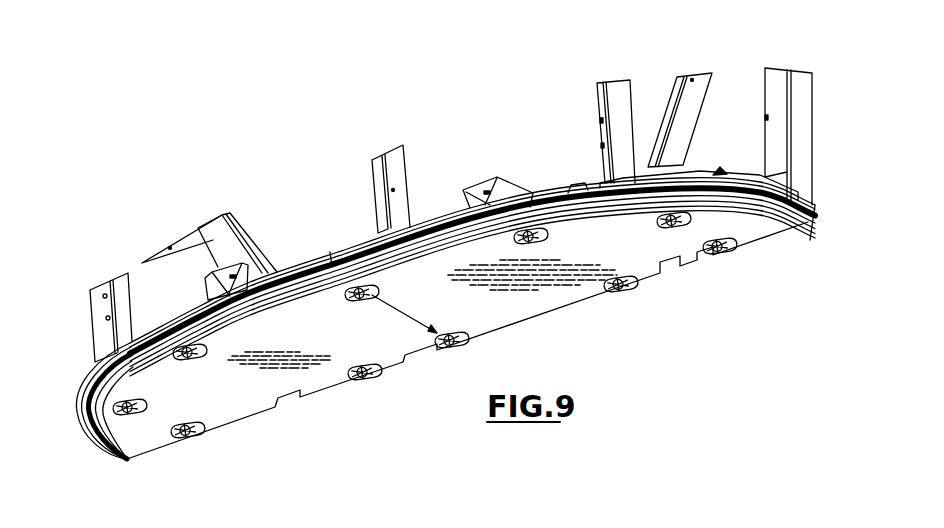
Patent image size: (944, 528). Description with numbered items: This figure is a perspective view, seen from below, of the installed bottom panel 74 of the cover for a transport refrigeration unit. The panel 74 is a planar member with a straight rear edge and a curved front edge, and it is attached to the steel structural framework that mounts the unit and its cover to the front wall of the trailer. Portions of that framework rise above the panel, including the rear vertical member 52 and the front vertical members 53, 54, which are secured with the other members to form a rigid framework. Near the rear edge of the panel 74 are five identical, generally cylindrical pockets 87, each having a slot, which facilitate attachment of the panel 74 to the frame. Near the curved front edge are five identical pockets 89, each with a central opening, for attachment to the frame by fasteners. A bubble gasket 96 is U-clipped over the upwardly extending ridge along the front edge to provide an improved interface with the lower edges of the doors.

The rear vertical member 52 is at (787, 110).
The front vertical member 53 is at (93, 342).
The front vertical member 54 is at (615, 100).
The bottom panel 74 is at (372, 340).
The pocket 87 is at (623, 283).
The pocket 89 is at (530, 243).
The bubble gasket 96 is at (740, 200).